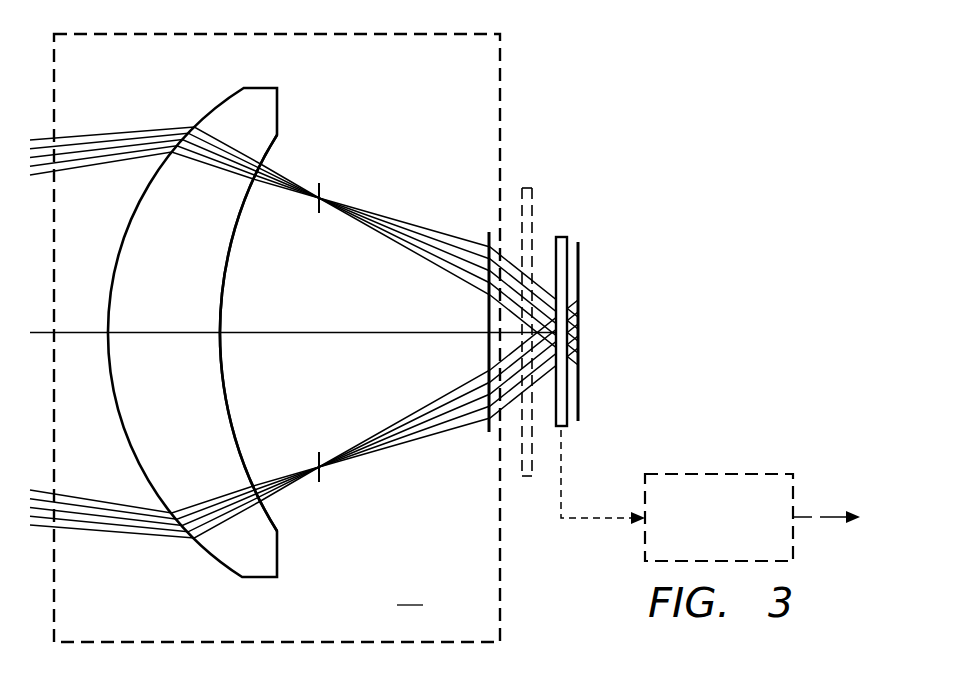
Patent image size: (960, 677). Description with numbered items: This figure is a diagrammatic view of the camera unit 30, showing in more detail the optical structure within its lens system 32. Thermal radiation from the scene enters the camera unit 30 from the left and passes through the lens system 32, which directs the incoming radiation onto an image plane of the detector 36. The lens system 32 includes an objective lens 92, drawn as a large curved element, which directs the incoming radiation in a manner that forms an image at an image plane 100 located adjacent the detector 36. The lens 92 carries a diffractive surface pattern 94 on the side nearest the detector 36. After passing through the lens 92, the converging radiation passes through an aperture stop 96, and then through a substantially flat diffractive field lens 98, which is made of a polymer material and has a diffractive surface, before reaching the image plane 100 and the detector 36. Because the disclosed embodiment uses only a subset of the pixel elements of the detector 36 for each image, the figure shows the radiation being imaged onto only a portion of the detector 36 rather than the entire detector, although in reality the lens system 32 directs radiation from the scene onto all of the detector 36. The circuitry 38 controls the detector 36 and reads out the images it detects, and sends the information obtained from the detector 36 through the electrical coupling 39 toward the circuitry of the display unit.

The camera unit 30 is at (689, 105).
The lens system 32 is at (527, 186).
The detector 36 is at (562, 236).
The circuitry 38 is at (718, 473).
The electrical coupling 39 is at (810, 516).
The objective lens 92 is at (278, 111).
The diffractive surface pattern 94 is at (235, 431).
The aperture stop 96 is at (322, 190).
The diffractive field lens 98 is at (487, 352).
The image plane 100 is at (580, 276).